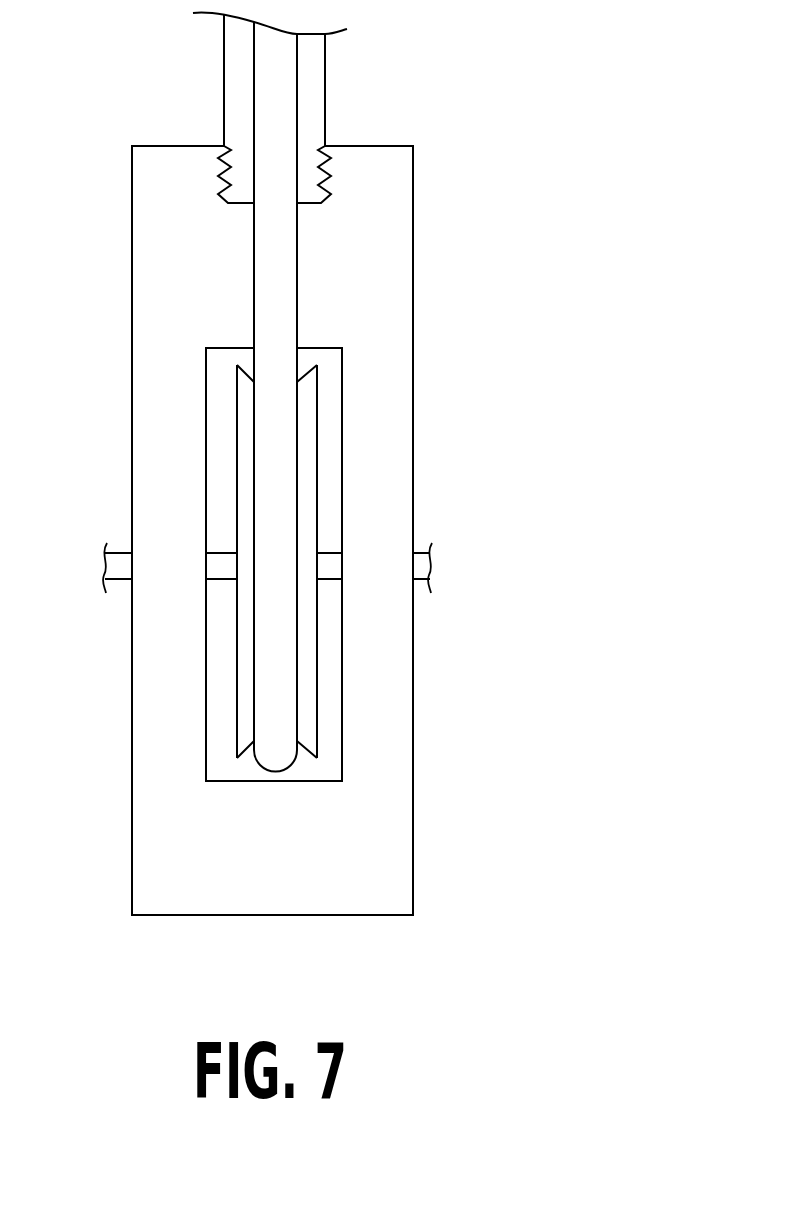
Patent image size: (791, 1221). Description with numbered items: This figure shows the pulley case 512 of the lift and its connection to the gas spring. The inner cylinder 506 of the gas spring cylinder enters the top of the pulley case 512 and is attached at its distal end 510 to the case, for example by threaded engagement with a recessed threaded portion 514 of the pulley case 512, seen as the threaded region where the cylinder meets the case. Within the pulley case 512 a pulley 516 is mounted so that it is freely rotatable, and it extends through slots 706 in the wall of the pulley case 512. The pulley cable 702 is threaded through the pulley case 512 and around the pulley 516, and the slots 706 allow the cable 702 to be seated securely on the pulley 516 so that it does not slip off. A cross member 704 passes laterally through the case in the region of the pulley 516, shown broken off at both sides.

The inner cylinder 506 is at (325, 73).
The distal end 510 is at (226, 148).
The pulley case 512 is at (420, 845).
The recessed threaded portion 514 is at (325, 190).
The pulley 516 is at (236, 396).
The pulley cable 702 is at (297, 470).
The cross rod 704 is at (430, 588).
The slots 706 is at (342, 380).